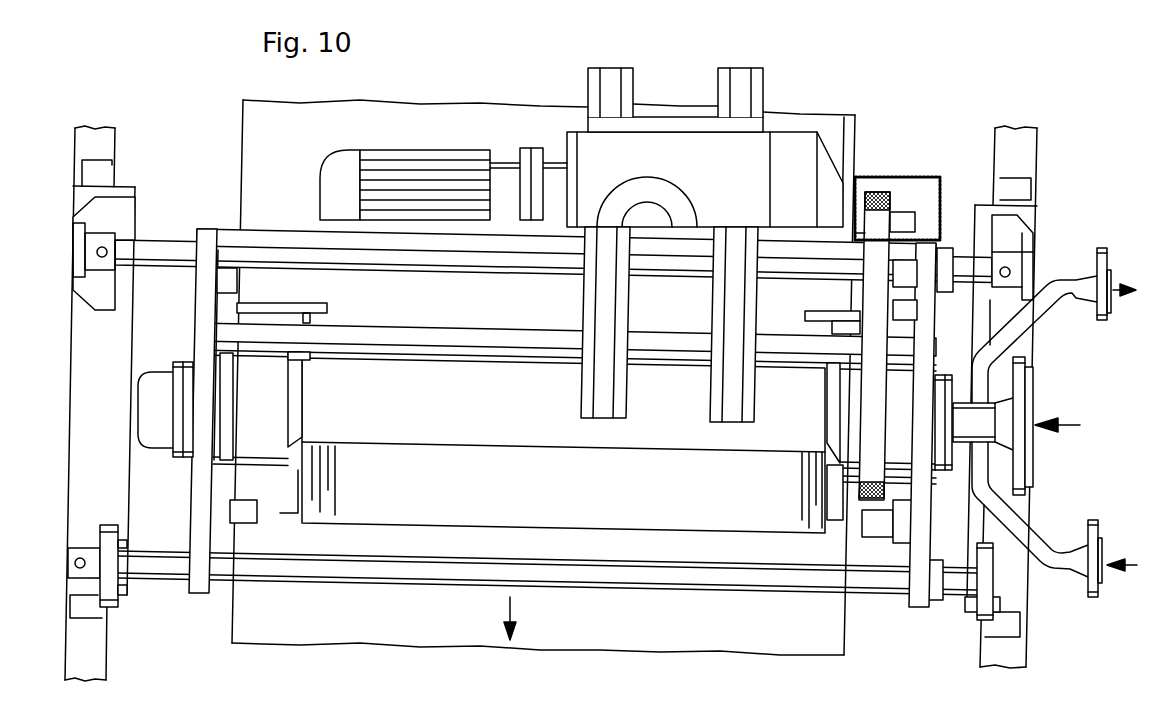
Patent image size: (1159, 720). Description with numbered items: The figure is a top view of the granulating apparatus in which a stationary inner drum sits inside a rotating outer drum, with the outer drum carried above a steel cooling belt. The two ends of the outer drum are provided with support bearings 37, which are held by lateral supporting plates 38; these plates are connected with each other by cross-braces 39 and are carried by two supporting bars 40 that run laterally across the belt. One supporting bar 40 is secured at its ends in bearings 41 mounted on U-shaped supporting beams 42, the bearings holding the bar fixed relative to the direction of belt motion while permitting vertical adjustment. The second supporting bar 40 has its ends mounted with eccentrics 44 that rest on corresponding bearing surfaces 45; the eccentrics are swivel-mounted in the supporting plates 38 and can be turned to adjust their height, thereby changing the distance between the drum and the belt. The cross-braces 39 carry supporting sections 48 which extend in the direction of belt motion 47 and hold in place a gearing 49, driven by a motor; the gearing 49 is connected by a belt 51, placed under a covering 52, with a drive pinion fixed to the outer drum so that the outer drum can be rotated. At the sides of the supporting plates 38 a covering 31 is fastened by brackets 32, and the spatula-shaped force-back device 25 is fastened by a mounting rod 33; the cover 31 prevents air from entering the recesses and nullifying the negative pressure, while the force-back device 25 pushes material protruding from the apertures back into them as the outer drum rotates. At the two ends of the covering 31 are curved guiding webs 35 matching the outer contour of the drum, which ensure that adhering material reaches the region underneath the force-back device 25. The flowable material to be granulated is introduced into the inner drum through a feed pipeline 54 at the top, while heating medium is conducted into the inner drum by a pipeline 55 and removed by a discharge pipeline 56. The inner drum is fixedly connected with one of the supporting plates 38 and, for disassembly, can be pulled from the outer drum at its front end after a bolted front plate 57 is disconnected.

The force-back device 25 is at (707, 508).
The covering 31 is at (660, 370).
The brackets 32 is at (320, 323).
The mounting rod 33 is at (840, 517).
The curved guiding webs 35 is at (300, 417).
The support bearings 37 is at (207, 388).
The supporting plates 38 is at (207, 270).
The cross-braces 39 is at (460, 243).
The supporting bars 40 is at (315, 253).
The bearings 41 is at (100, 212).
The U-shaped supporting beams 42 is at (88, 490).
The eccentrics 44 is at (110, 545).
The bearing surfaces 45 is at (97, 583).
The direction of belt motion 47 is at (510, 602).
The supporting sections 48 is at (740, 93).
The gearing 49 is at (750, 162).
The belt 51 is at (873, 247).
The covering 52 is at (875, 178).
The feed pipeline 54 is at (980, 418).
The pipeline 55 is at (1045, 547).
The discharge pipeline 56 is at (1058, 305).
The bolted front plate 57 is at (180, 420).